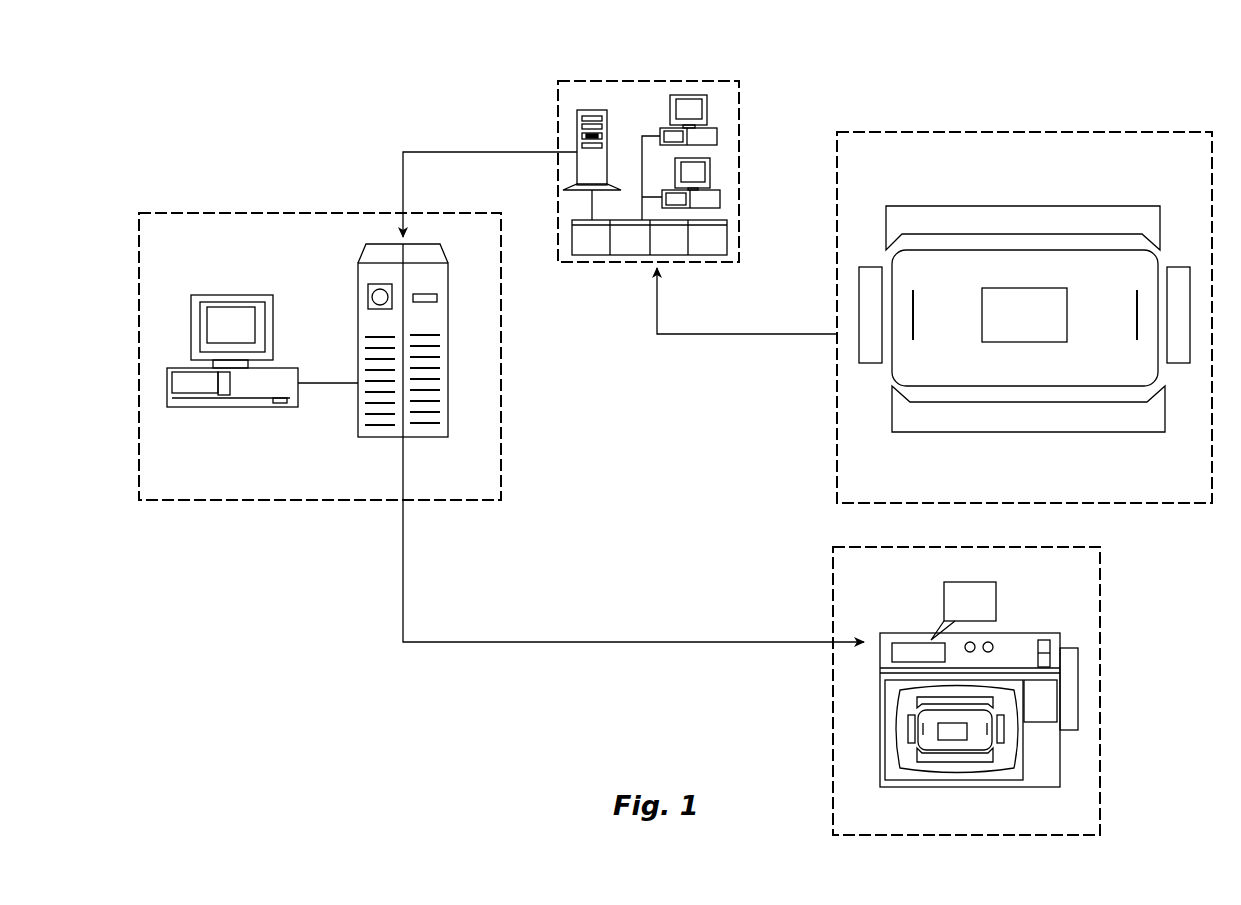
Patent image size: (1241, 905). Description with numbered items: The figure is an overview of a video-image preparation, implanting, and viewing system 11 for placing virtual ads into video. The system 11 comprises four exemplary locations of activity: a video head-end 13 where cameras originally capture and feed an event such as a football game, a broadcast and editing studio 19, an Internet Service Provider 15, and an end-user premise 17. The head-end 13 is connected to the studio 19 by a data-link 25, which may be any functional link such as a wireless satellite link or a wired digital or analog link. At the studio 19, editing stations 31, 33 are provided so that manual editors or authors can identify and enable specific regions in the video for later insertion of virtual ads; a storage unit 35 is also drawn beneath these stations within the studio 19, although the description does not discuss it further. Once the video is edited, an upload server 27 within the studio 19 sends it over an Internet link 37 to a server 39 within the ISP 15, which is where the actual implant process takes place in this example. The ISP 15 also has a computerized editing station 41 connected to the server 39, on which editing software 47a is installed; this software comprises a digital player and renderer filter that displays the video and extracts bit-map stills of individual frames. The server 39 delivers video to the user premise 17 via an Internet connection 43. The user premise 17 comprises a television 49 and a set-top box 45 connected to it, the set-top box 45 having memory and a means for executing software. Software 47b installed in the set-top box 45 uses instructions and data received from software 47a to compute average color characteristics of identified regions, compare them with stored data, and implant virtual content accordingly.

The video-image preparation, implanting, and viewing system 11 is at (342, 148).
The video head-end 13 is at (1027, 122).
The Internet Service Provider (ISP) 15 is at (524, 410).
The end-user premise 17 is at (1119, 704).
The broadcast and editing studio 19 is at (754, 107).
The data-link 25 is at (755, 334).
The upload server 27 is at (595, 110).
The editing station 31 is at (668, 110).
The editing station 33 is at (720, 195).
The storage array 35 is at (636, 258).
The Internet link 37 is at (508, 152).
The server 39 is at (358, 313).
The computerized editing station 41 is at (260, 358).
The Internet connection 43 is at (570, 642).
The set-top box 45 is at (1058, 638).
The editing software 47a is at (235, 307).
The software 47b is at (940, 617).
The television 49 is at (882, 708).